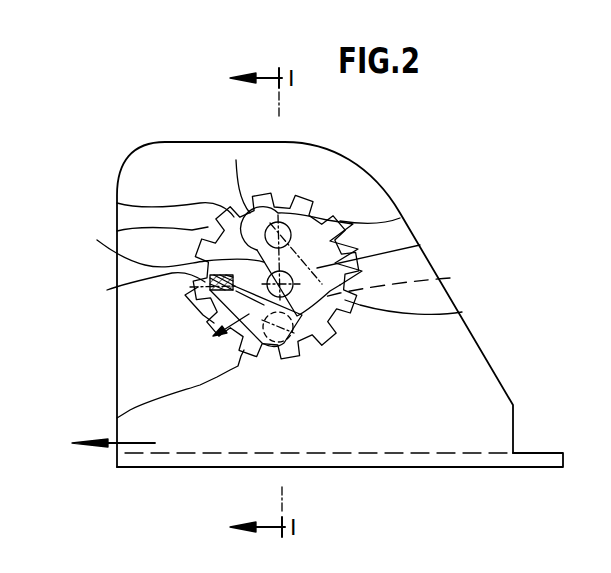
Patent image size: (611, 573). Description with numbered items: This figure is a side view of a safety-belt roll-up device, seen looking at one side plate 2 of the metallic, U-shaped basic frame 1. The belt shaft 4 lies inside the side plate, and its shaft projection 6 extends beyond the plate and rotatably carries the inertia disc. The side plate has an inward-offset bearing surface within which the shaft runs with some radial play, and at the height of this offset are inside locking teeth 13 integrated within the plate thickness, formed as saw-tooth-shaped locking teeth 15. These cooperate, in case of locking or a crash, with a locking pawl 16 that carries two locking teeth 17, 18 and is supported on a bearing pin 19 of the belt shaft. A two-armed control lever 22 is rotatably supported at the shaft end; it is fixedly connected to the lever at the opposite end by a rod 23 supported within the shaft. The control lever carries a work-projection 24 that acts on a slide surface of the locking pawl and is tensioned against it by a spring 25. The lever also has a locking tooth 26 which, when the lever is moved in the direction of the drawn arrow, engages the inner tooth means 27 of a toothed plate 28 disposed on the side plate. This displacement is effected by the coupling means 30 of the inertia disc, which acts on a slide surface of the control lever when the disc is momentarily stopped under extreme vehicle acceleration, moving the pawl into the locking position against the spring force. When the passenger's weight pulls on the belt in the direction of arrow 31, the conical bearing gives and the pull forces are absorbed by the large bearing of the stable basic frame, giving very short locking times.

The basic frame 1 is at (380, 471).
The side plate 2 is at (482, 396).
The belt shaft 4 is at (260, 220).
The shaft projection 6 is at (184, 262).
The inside locking teeth 13 is at (303, 205).
The saw-tooth-shaped locking teeth 15 is at (325, 212).
The locking pawl 16 is at (236, 160).
The locking tooth 17 is at (406, 212).
The locking tooth 18 is at (420, 245).
The bearing pin 19 is at (118, 203).
The control lever 22 is at (312, 358).
The rod 23 is at (266, 345).
The work-projection 24 is at (462, 312).
The spring 25 is at (399, 281).
The locking tooth 26 is at (192, 309).
The inner tooth means 27 is at (144, 288).
The toothed plate 28 is at (128, 368).
The coupling means 30 is at (167, 246).
The arrow 31 is at (138, 438).